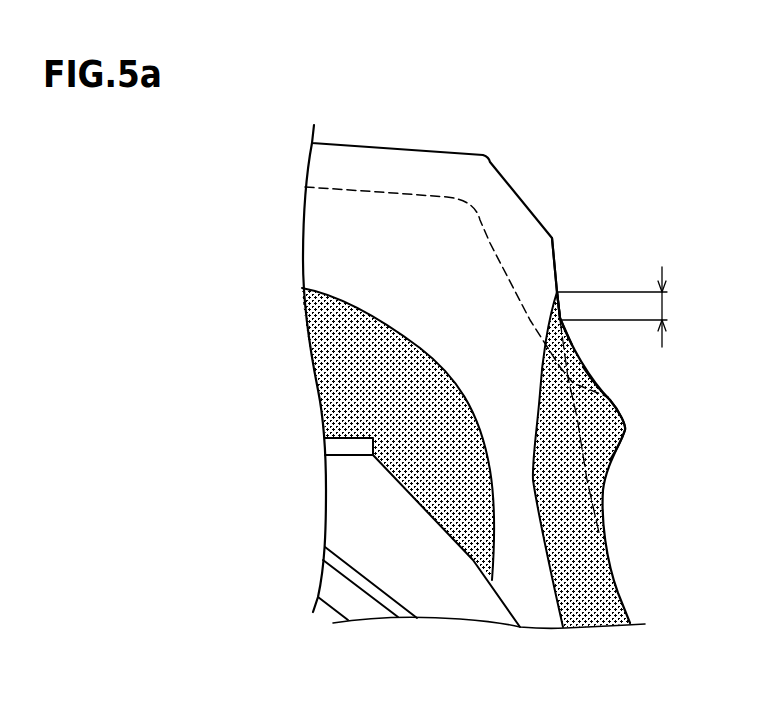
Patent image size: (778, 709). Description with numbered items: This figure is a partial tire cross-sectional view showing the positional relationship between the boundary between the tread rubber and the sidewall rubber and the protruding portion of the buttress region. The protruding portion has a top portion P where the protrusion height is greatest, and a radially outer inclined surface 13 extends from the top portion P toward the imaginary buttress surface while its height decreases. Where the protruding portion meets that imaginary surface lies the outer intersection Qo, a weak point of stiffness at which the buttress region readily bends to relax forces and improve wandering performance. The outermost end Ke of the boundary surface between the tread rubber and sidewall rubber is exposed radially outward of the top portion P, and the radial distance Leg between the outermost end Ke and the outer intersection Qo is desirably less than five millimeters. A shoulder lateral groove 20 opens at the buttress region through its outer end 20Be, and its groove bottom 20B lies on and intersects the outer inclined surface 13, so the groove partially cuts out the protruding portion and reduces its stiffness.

The shoulder lateral groove 20 is at (473, 375).
The groove bottom 20B is at (493, 243).
The radially outer inclined surface 13 is at (583, 367).
The outermost end Ke is at (557, 292).
The outer intersection Qo is at (560, 318).
The distance Leg is at (637, 307).
The outer end 20Be is at (612, 397).
The top portion P is at (625, 430).